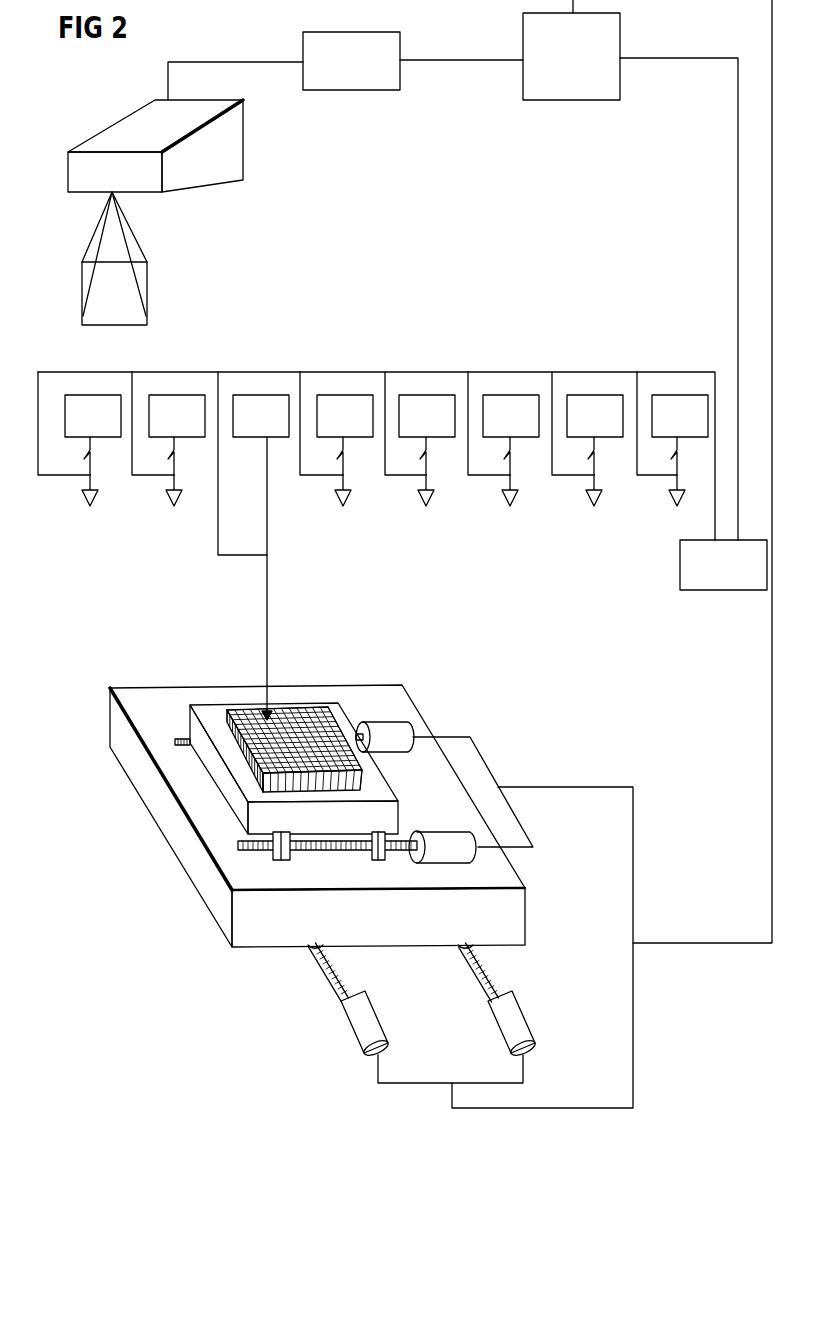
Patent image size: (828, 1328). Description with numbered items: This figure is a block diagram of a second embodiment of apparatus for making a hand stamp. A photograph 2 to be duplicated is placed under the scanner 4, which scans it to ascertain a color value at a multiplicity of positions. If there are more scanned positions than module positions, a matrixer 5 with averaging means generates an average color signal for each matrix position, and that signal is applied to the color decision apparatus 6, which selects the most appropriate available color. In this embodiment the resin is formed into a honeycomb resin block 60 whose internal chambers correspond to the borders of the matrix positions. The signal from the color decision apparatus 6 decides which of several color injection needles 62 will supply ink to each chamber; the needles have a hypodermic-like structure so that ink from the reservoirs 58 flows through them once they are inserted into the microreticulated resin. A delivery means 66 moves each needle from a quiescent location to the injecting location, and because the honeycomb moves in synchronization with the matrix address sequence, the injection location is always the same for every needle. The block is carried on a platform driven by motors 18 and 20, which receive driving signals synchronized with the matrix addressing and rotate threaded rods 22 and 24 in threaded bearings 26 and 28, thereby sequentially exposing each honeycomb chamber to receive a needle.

The photograph 2 is at (147, 283).
The scanner 4 is at (243, 135).
The matrixer 5 is at (400, 41).
The color decision apparatus 6 is at (620, 36).
The reservoirs 58 is at (668, 395).
The needles 62 is at (277, 716).
The delivery means 66 is at (680, 569).
The resin block 60 is at (250, 749).
The motor 18 is at (407, 731).
The threaded rod 24 is at (175, 742).
The threaded bearing 28 is at (372, 856).
The threaded bearing 26 is at (316, 952).
The threaded rod 22 is at (347, 992).
The motor 20 is at (370, 1051).